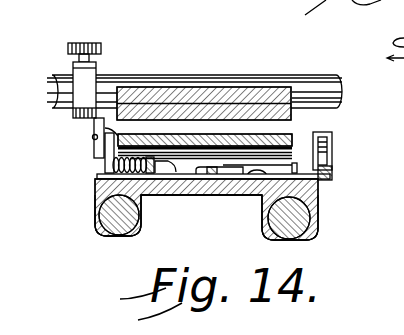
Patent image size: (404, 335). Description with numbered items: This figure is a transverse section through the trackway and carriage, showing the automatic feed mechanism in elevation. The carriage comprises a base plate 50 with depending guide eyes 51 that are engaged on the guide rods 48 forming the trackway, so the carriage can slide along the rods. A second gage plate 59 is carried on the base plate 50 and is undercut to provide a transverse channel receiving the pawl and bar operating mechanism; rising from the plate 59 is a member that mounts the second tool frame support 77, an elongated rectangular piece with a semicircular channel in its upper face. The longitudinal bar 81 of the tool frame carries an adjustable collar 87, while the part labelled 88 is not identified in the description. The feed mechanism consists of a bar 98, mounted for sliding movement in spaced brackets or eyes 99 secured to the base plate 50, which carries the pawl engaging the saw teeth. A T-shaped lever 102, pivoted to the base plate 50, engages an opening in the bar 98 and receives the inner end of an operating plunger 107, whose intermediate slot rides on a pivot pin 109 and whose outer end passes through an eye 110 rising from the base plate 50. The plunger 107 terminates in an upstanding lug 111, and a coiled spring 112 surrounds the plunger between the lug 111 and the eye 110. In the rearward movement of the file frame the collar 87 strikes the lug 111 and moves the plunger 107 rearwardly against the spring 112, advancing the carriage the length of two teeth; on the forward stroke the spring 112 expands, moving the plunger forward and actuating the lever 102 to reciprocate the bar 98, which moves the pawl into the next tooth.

The guide rods 48 is at (116, 234).
The base plate 50 is at (208, 179).
The guide eyes 51 is at (95, 200).
The second gage plate 59 is at (97, 131).
The second tool frame support 77 is at (198, 103).
The longitudinal bar 81 is at (329, 88).
The collar 87 is at (80, 70).
The knob 88 is at (88, 43).
The bar 98 is at (333, 172).
The brackets or eyes 99 is at (333, 143).
The T-shaped lever 102 is at (262, 186).
The operating plunger 107 is at (188, 190).
The pivot pin 109 is at (169, 172).
The eye 110 is at (155, 177).
The upstanding lug 111 is at (104, 165).
The coiled spring 112 is at (112, 170).